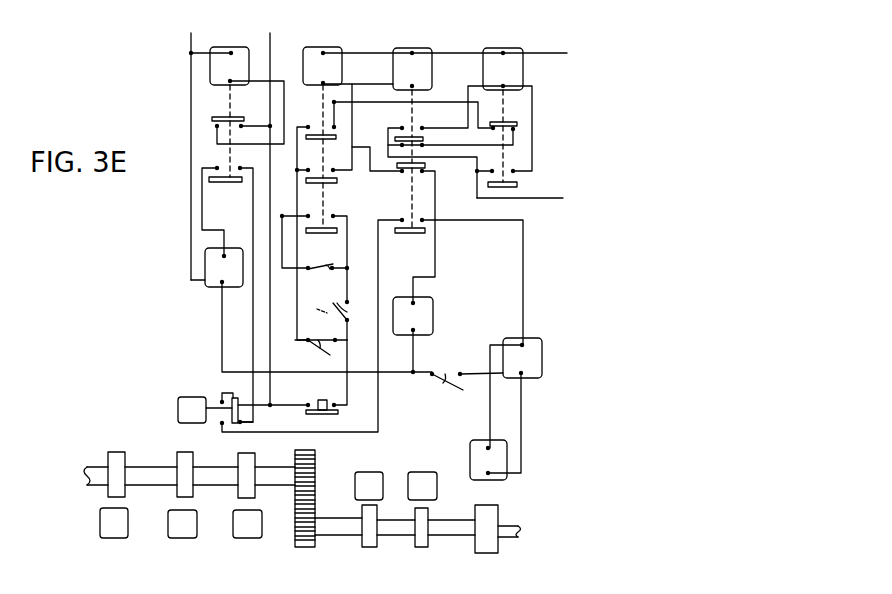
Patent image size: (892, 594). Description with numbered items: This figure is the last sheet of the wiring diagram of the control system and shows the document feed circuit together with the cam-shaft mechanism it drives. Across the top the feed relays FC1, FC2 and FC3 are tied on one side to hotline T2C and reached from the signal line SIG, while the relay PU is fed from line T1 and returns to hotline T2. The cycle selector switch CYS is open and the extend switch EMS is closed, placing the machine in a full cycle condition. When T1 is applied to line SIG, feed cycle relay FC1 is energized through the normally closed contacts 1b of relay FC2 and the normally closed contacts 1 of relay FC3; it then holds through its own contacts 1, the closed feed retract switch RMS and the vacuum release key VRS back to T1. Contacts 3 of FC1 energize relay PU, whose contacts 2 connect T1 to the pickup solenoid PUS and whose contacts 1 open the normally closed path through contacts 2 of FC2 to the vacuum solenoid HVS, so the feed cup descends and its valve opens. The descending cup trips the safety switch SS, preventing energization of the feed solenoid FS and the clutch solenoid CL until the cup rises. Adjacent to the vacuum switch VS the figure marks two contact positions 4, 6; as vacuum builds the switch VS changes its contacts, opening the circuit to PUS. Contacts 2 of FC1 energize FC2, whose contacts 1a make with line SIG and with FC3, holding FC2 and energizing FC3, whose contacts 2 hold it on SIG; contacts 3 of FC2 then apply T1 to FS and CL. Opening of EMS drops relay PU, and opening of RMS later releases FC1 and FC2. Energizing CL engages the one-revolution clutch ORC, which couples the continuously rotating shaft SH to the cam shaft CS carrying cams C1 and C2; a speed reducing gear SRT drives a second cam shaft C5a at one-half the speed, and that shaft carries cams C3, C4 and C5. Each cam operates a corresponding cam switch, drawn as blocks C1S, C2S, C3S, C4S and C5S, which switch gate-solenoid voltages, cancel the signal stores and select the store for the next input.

The hotline T2 is at (191, 42).
The power line T1 is at (270, 42).
The hotline T2C is at (445, 46).
The signal line SIG is at (567, 190).
The relay PU is at (229, 112).
The feed cycle relay FC1 is at (322, 137).
The feed relay FC2 is at (412, 138).
The feed relay FC3 is at (503, 115).
The pickup solenoid PUS is at (224, 267).
The vacuum solenoid HVS is at (413, 316).
The feed solenoid FS is at (522, 358).
The clutch solenoid CL is at (488, 460).
The vacuum switch VS is at (192, 410).
The relay contacts 1 is at (208, 127).
The relay contacts 2 is at (212, 166).
The relay contacts 3 is at (334, 217).
The relay contacts 1a is at (407, 127).
The normally closed contacts 1b is at (424, 139).
The relay element 4 is at (242, 395).
The relay element 6 is at (218, 398).
The cycle selector switch CYS is at (315, 266).
The extend switch EMS is at (324, 304).
The feed retract switch RMS is at (317, 352).
The vacuum release key VRS is at (316, 396).
The safety switch SS is at (448, 369).
The second cam shaft C5a is at (83, 482).
The cam C5 is at (117, 450).
The cam C4 is at (182, 451).
The cam C3 is at (246, 453).
The cam C2 is at (358, 545).
The cam C1 is at (413, 545).
The cam shaft CS is at (457, 540).
The speed reducing gear SRT is at (317, 500).
The clutch ORC is at (500, 517).
The continuously rotating shaft SH is at (523, 540).
The cam switch C5S is at (94, 524).
The cam switch C4S is at (168, 526).
The cam switch C3S is at (232, 526).
The cam switch C2S is at (378, 467).
The cam switch C1S is at (430, 469).